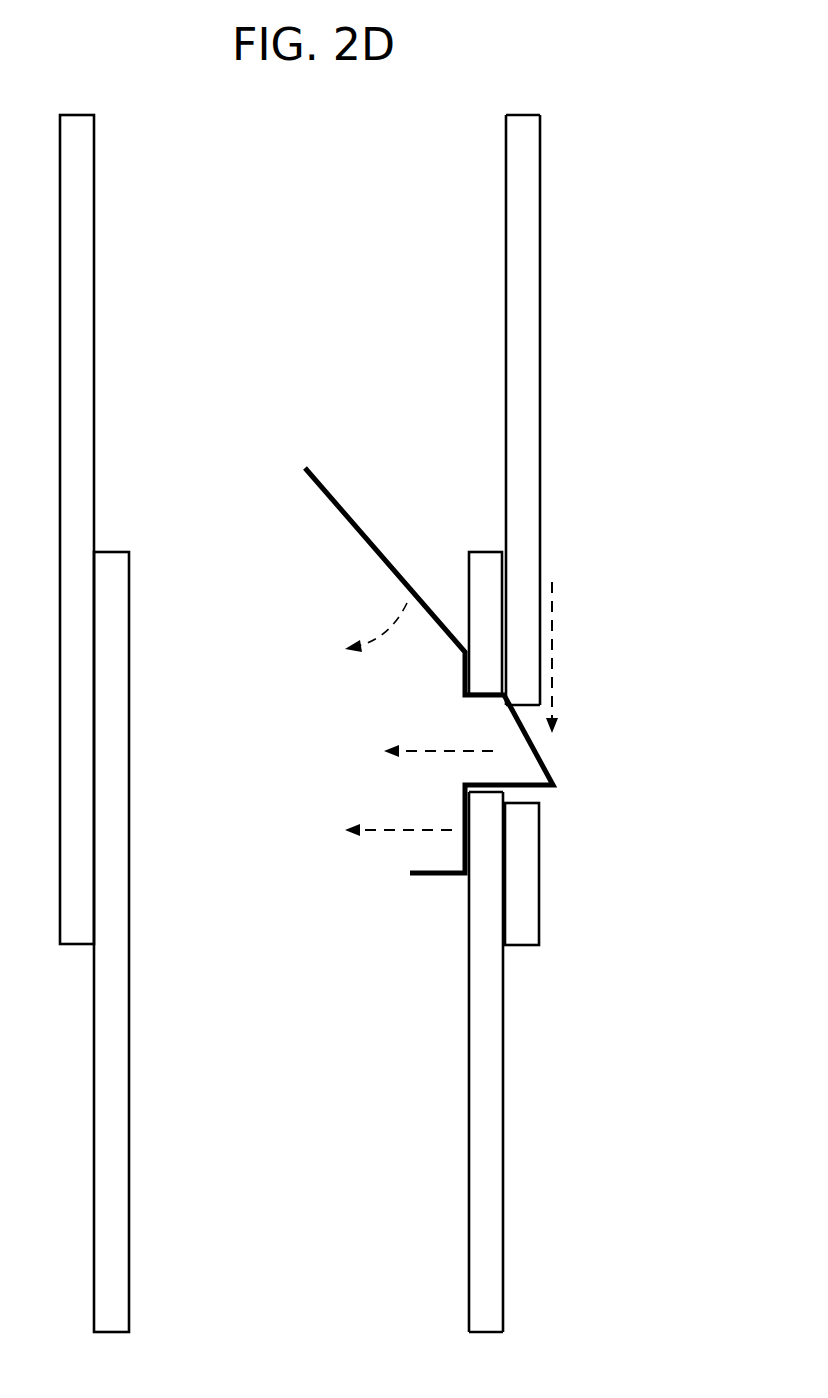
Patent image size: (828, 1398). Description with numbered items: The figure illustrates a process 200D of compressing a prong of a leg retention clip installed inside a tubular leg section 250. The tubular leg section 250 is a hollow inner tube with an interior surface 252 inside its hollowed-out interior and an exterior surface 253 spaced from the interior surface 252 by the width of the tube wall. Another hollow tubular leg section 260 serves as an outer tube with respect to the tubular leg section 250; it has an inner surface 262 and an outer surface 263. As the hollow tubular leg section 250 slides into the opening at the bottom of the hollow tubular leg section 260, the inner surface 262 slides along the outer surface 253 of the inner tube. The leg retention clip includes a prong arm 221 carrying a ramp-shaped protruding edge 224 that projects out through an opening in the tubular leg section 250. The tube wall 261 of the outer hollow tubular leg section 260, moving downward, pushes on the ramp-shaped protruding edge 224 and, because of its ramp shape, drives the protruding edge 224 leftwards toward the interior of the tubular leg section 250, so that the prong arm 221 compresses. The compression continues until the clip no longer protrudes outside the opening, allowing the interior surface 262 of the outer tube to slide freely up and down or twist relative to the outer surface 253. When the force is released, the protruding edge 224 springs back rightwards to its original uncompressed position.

The process of compressing a prong 200D is at (645, 95).
The hollow tubular leg section 260 is at (318, 216).
The tubular leg section 250 is at (323, 1106).
The tube wall 261 is at (527, 566).
The inner surface 262 is at (506, 460).
The outer surface 263 is at (541, 442).
The interior surface 252 is at (468, 1033).
The exterior surface 253 is at (504, 1062).
The prong arm 221 is at (385, 555).
The ramp-shaped protruding edge 224 is at (545, 766).